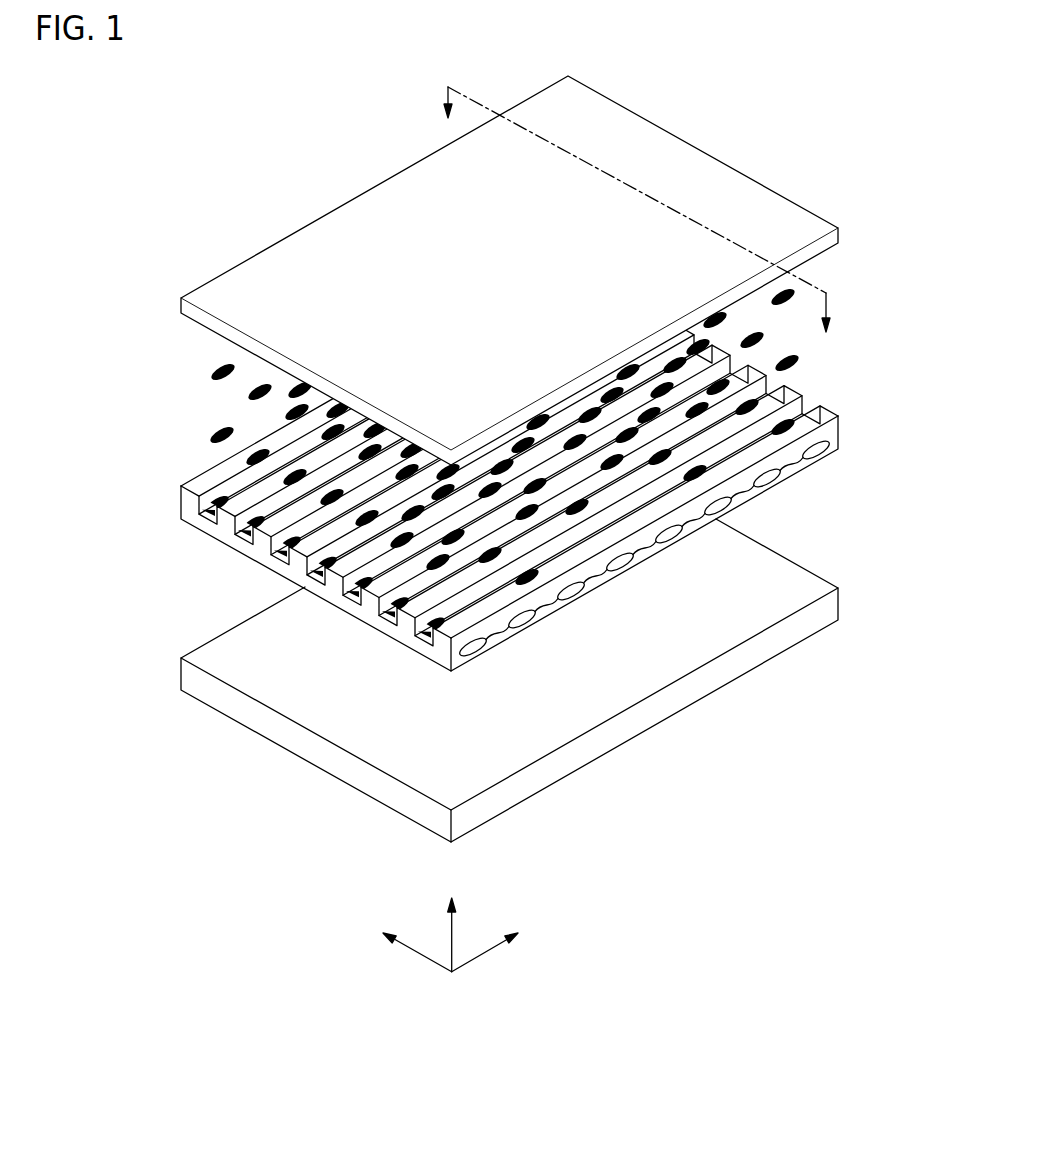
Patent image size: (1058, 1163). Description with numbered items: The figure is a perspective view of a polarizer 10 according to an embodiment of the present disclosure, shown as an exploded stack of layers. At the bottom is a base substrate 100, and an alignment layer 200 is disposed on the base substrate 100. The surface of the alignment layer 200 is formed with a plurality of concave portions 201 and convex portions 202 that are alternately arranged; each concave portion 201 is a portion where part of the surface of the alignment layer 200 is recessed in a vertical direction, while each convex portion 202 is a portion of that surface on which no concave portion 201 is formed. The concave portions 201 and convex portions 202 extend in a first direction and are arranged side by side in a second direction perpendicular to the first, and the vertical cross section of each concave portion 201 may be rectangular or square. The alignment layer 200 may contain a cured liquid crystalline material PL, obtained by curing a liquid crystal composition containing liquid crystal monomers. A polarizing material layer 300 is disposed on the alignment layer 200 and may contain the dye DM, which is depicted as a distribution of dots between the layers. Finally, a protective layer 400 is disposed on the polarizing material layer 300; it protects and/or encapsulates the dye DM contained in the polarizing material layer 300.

The polarizer 10 is at (735, 139).
The base substrate 100 is at (839, 606).
The alignment layer 200 is at (506, 500).
The concave portion 201 is at (208, 520).
The convex portion 202 is at (193, 489).
The polarizing material layer 300 is at (534, 415).
The protective layer 400 is at (841, 234).
The dye DM is at (222, 434).
The cured liquid crystalline material PL is at (817, 452).